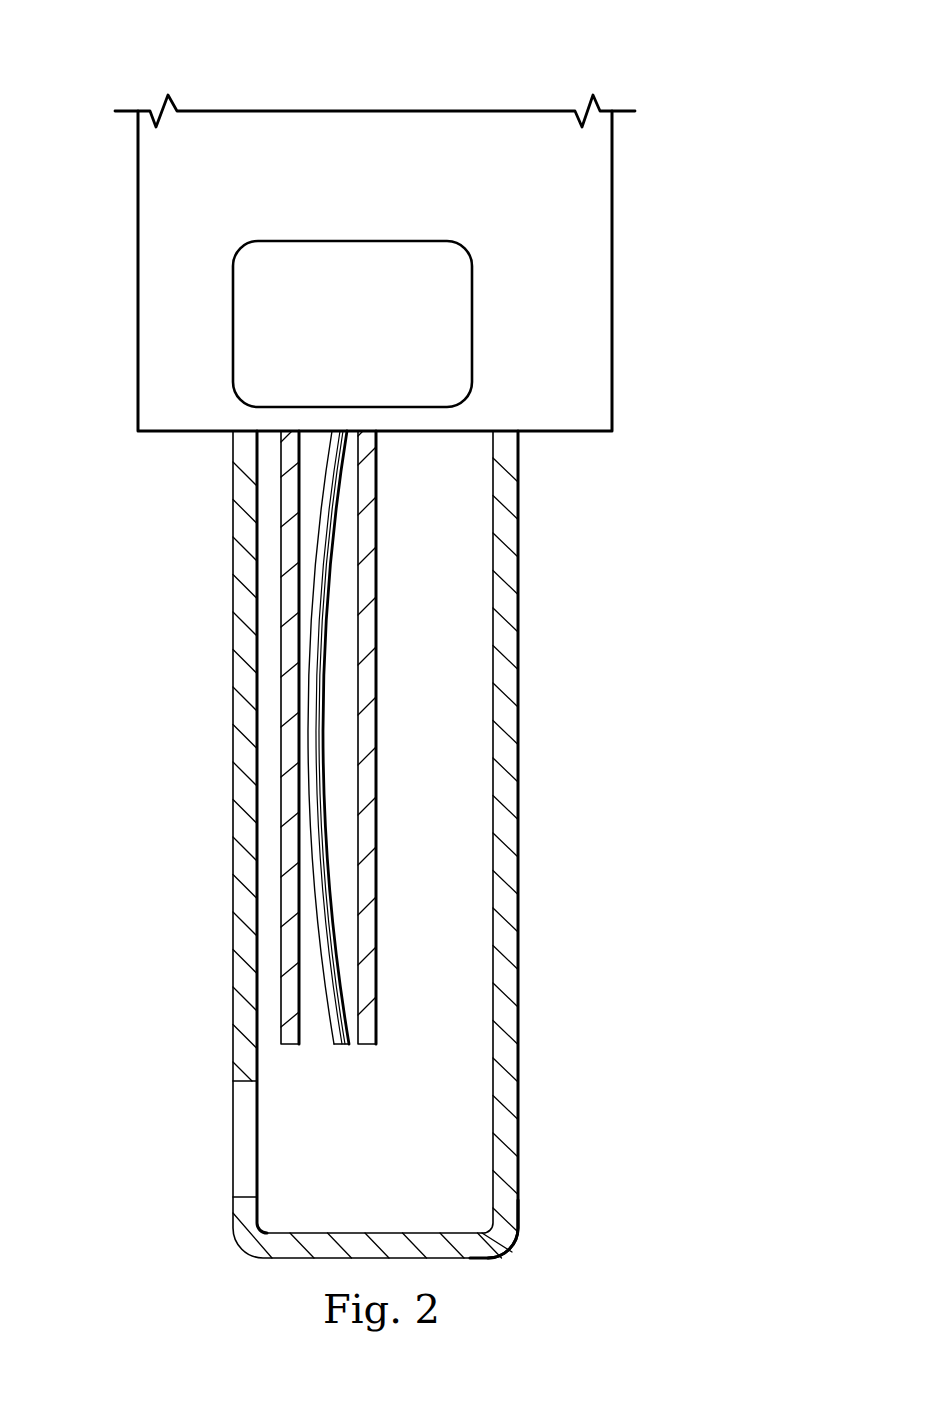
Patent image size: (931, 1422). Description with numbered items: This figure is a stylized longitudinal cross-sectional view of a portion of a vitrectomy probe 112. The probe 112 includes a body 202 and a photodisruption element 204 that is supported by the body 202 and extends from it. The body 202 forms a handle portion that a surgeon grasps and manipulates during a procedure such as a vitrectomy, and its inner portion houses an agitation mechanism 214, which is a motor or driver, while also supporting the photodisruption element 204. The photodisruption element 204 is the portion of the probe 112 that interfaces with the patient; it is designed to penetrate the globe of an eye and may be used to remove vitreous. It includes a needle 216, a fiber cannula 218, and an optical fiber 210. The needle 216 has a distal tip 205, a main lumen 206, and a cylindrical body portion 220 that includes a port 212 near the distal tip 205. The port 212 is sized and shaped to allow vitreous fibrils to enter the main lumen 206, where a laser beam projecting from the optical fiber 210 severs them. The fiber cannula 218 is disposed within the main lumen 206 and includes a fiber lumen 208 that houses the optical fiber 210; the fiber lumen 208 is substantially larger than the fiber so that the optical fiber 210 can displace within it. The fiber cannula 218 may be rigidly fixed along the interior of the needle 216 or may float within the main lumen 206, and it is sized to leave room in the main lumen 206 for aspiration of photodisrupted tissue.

The vitrectomy probe 112 is at (95, 73).
The body 202 is at (648, 288).
The photodisruption element 204 is at (408, 878).
The distal tip 205 is at (531, 1194).
The main lumen 206 is at (531, 1031).
The fiber lumen 208 is at (315, 1033).
The optical fiber 210 is at (338, 1046).
The port 212 is at (212, 1155).
The agitation mechanism 214 is at (329, 340).
The needle 216 is at (487, 1260).
The fiber cannula 218 is at (366, 930).
The cylindrical body portion 220 is at (414, 878).